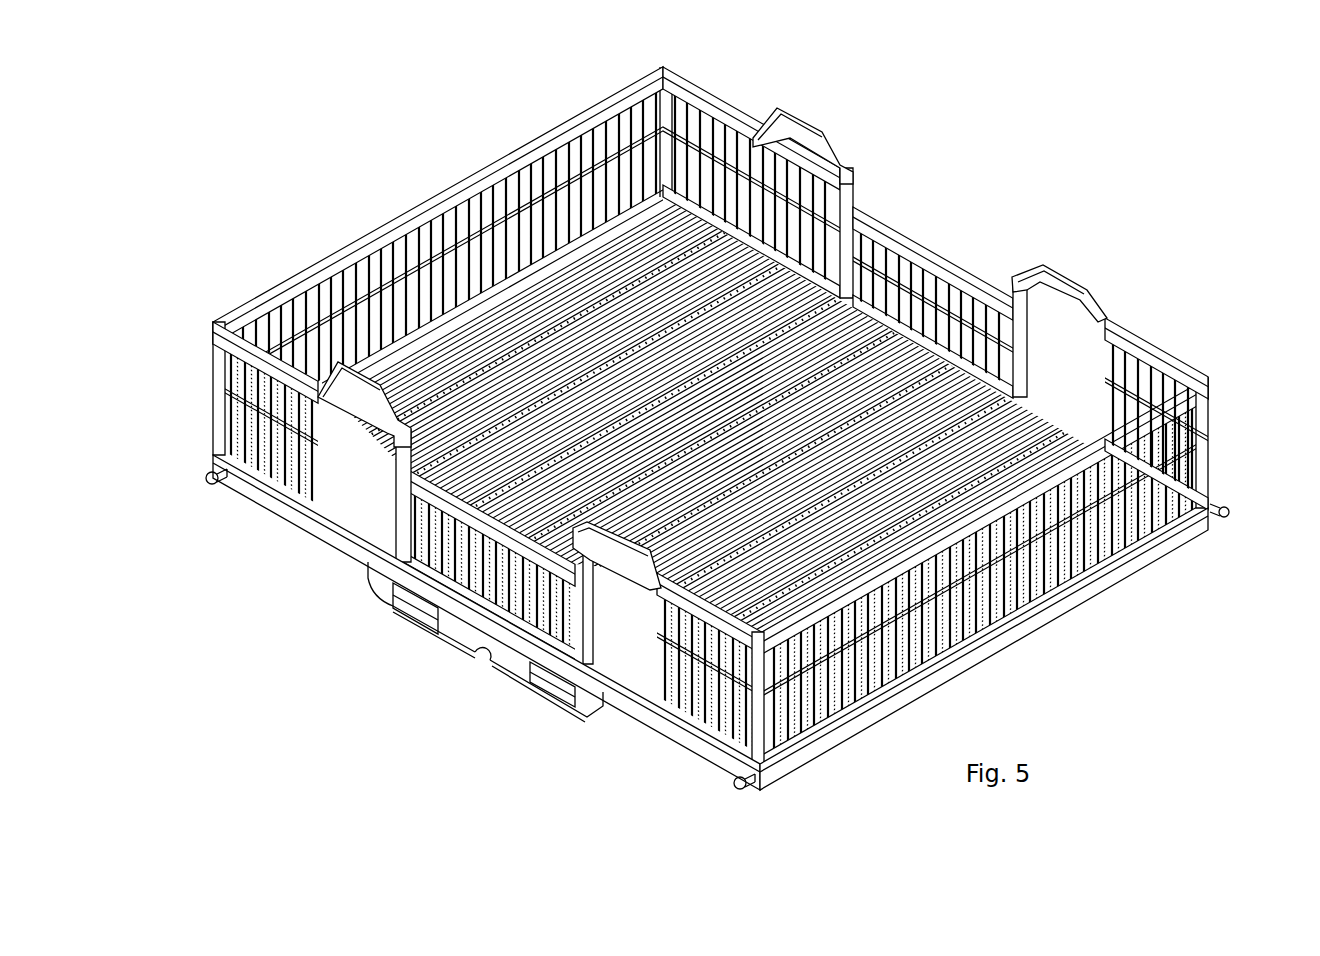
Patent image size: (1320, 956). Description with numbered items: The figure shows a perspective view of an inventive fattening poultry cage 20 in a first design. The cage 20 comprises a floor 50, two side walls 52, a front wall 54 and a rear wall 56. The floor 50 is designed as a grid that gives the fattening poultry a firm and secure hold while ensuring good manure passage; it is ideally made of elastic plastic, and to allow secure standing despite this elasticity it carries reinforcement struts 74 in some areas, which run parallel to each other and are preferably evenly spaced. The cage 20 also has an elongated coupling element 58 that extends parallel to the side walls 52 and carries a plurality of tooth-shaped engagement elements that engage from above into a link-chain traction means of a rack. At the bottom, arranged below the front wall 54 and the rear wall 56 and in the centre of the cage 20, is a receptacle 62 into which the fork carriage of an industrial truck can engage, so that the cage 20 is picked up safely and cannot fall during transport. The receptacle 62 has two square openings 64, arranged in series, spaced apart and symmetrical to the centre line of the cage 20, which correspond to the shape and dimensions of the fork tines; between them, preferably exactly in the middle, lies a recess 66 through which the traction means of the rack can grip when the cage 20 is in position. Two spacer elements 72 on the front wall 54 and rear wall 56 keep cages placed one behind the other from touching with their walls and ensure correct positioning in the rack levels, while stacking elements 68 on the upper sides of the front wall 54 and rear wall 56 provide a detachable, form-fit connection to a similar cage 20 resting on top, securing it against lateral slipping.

The fattening poultry cage 20 is at (1075, 201).
The floor 50 is at (597, 243).
The side wall 52 is at (417, 223).
The front wall 54 is at (685, 718).
The rear wall 56 is at (720, 147).
The coupling element 58 is at (893, 347).
The receptacle 62 is at (365, 655).
The opening 64 is at (553, 690).
The recess 66 is at (480, 653).
The stacking element 68 is at (1060, 295).
The spacer element 72 is at (207, 478).
The reinforcement strut 74 is at (387, 340).